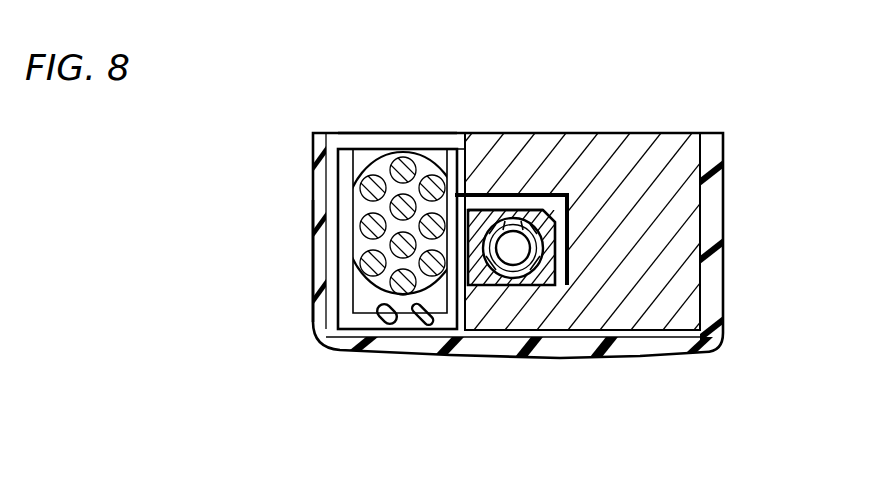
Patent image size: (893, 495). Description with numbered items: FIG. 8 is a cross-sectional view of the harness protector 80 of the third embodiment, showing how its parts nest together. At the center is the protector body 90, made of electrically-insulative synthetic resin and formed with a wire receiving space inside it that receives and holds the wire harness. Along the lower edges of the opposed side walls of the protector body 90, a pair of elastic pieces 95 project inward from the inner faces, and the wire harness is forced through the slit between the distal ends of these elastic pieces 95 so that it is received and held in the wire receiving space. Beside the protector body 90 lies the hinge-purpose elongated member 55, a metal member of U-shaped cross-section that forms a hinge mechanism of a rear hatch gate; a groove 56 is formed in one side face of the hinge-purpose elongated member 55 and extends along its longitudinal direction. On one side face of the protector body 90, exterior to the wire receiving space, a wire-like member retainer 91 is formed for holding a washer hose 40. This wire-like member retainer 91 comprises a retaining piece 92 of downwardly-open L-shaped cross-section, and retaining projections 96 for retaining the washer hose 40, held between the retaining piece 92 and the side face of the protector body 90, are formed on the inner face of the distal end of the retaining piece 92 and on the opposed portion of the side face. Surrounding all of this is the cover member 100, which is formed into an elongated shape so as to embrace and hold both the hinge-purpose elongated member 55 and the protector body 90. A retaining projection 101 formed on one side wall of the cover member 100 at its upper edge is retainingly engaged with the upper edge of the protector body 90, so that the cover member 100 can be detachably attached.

The harness protector 80 is at (292, 114).
The retaining projection 101 is at (365, 131).
The washer hose 40 is at (491, 203).
The wire-like member retainer 91 is at (528, 190).
The groove 56 is at (546, 196).
The hinge-purpose elongated member 55 is at (664, 131).
The protector body 90 is at (334, 175).
The cover member 100 is at (309, 253).
The retaining piece 92 is at (562, 262).
The elastic pieces 95 is at (393, 325).
The retaining projections 96 is at (502, 287).